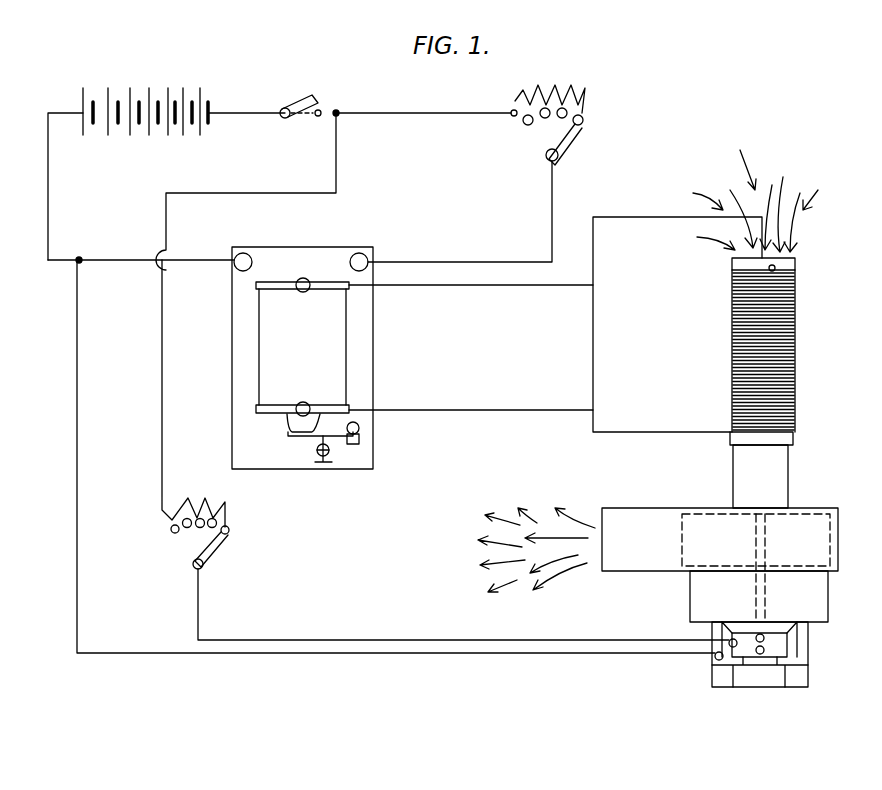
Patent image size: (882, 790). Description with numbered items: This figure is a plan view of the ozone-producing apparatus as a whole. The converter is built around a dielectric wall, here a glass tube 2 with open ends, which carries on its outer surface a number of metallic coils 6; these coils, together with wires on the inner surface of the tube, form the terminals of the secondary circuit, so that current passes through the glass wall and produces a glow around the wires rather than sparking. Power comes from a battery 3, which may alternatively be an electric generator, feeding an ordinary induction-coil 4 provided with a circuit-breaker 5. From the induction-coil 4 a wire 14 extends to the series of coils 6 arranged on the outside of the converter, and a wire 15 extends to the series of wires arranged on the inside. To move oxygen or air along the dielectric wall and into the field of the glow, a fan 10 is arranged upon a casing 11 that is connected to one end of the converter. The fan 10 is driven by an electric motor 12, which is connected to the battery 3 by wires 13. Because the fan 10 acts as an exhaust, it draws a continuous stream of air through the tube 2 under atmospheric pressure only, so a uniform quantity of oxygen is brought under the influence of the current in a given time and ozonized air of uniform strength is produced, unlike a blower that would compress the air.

The glass tube 2 is at (742, 265).
The battery 3 is at (124, 130).
The induction-coil 4 is at (302, 358).
The circuit-breaker 5 is at (338, 437).
The metallic coils 6 is at (735, 302).
The fan 10 is at (690, 555).
The casing 11 is at (690, 512).
The electric motor 12 is at (782, 625).
The wires 13 is at (376, 640).
The wire 14 is at (435, 413).
The wire 15 is at (425, 291).